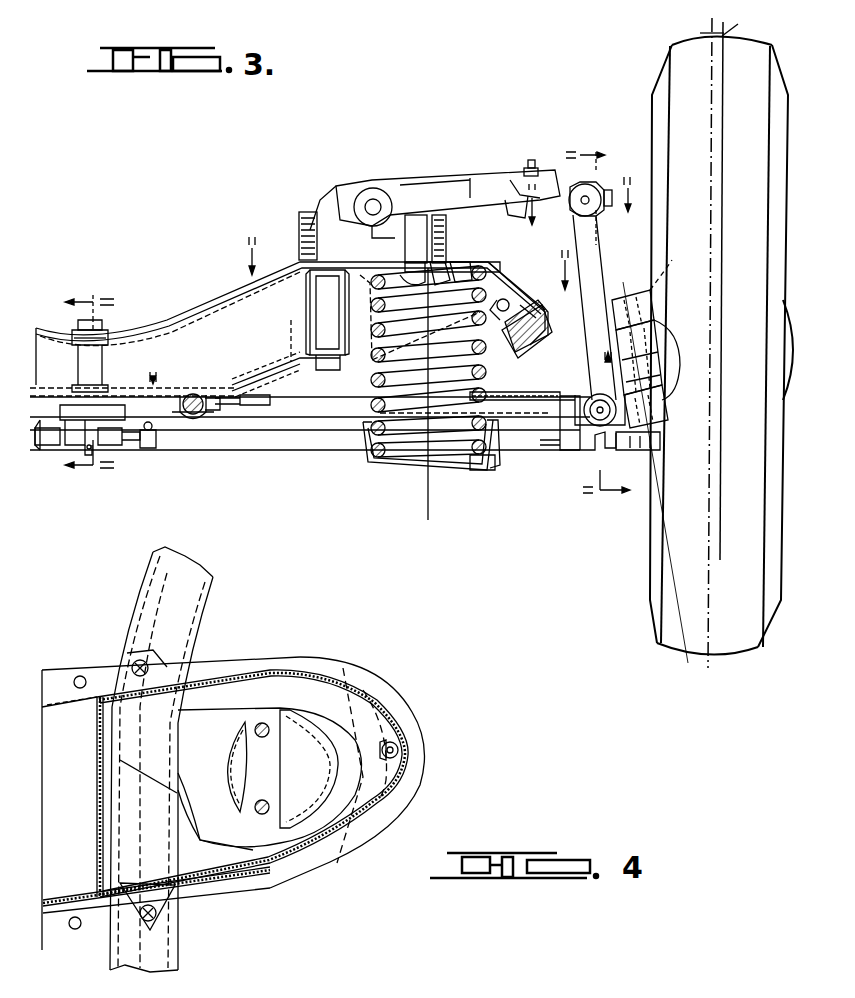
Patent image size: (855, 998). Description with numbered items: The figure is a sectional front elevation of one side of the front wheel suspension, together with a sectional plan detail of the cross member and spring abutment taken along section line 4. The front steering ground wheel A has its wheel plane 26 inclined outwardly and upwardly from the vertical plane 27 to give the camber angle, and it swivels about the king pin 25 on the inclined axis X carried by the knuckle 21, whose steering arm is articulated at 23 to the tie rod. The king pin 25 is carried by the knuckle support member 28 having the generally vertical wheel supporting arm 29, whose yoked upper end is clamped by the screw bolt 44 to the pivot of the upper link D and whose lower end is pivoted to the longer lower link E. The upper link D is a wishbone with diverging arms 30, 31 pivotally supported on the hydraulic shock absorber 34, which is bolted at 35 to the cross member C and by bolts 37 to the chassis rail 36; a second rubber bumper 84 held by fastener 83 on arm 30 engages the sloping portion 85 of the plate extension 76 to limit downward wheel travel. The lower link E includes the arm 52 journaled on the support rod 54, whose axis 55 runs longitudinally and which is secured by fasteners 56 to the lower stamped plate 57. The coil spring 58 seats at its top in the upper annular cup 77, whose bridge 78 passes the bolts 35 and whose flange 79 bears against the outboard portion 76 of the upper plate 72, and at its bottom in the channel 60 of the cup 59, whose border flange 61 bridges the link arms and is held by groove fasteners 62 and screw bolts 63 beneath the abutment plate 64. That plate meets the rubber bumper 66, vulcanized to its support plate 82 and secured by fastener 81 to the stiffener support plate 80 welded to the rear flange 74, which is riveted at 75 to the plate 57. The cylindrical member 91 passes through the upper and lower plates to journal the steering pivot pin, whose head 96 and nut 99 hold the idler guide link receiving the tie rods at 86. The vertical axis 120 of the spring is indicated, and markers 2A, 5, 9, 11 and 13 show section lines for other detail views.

In FIG. 3, the front steering ground wheel A is at (772, 58).
In FIG. 3, the wheel plane 26 is at (741, 24).
In FIG. 3, the vertical plane 27 is at (712, 34).
In FIG. 3, the arm of upper link 30 is at (440, 182).
In FIG. 3, the upper link D is at (470, 180).
In FIG. 3, the arm of upper link 31 is at (432, 187).
In FIG. 3, the second rubber bumper 84 is at (515, 182).
In FIG. 3, the fastener 83 is at (533, 162).
In FIG. 3, the hydraulic shock absorber 34 is at (340, 184).
In FIG. 3, the bolts 37 is at (307, 214).
In FIG. 3, the bolts 35 is at (430, 232).
In FIG. 4, the bolts 35 is at (268, 800).
In FIG. 3, the sloping portion of plate extension 85 is at (514, 250).
In FIG. 3, the section line 13 is at (584, 211).
In FIG. 3, the screw bolt 44 is at (600, 186).
In FIG. 3, the wheel supporting arm 29 is at (592, 260).
In FIG. 3, the king pin axis X is at (651, 465).
In FIG. 3, the section line 9 is at (600, 313).
In FIG. 3, the knuckle 21 is at (650, 300).
In FIG. 3, the king pin 25 is at (655, 278).
In FIG. 3, the knuckle support member 28 is at (652, 350).
In FIG. 3, the articulation 23 is at (645, 458).
In FIG. 3, the lower ball joint / section line 5 is at (386, 389).
In FIG. 3, the lower link E is at (560, 448).
In FIG. 3, the cross member C is at (170, 318).
In FIG. 4, the cross member C is at (54, 700).
In FIG. 3, the upper plate 72 is at (222, 302).
In FIG. 4, the upper plate 72 is at (97, 864).
In FIG. 3, the section line 4 is at (399, 270).
In FIG. 3, the section line 11 is at (78, 384).
In FIG. 3, the head of pivot pin 96 is at (104, 326).
In FIG. 3, the cylindrical member 91 is at (100, 368).
In FIG. 3, the lower control arm 2A is at (275, 440).
In FIG. 3, the groove fasteners 62 is at (370, 405).
In FIG. 3, the axis of support 55 is at (232, 398).
In FIG. 3, the support rod 54 is at (198, 418).
In FIG. 3, the fasteners 56 is at (222, 418).
In FIG. 3, the articulation 86 is at (62, 428).
In FIG. 3, the nut 99 is at (92, 452).
In FIG. 3, the side rail 36 is at (306, 290).
In FIG. 4, the side rail 36 is at (128, 556).
In FIG. 3, the rivets 75 is at (291, 320).
In FIG. 4, the rivets 75 is at (75, 929).
In FIG. 3, the lower stamped plate 57 is at (275, 372).
In FIG. 3, the arm of lower link 52 is at (315, 375).
In FIG. 3, the bridge 78 is at (436, 280).
In FIG. 4, the bridge 78 is at (270, 734).
In FIG. 3, the upper flange 79 is at (375, 282).
In FIG. 4, the upper flange 79 is at (193, 697).
In FIG. 3, the vertical axis 120 is at (426, 505).
In FIG. 3, the upper annular cup 77 is at (455, 268).
In FIG. 4, the upper annular cup 77 is at (313, 717).
In FIG. 3, the outboard portion 76 is at (485, 270).
In FIG. 3, the stiffener support plate 80 is at (508, 310).
In FIG. 4, the stiffener support plate 80 is at (367, 807).
In FIG. 3, the fastener 81 is at (510, 295).
In FIG. 4, the fastener 81 is at (403, 740).
In FIG. 3, the support plate 82 is at (540, 322).
In FIG. 3, the rubber bumper 66 is at (540, 340).
In FIG. 4, the rubber bumper 66 is at (368, 697).
In FIG. 3, the coil spring 58 is at (486, 380).
In FIG. 4, the coil spring 58 is at (327, 857).
In FIG. 3, the screw bolts 63 is at (488, 392).
In FIG. 3, the abutment plate 64 is at (548, 392).
In FIG. 3, the annular channel 60 is at (476, 470).
In FIG. 3, the border flange 61 is at (497, 466).
In FIG. 3, the cup 59 is at (490, 470).
In FIG. 4, the rear flange 74 is at (97, 667).